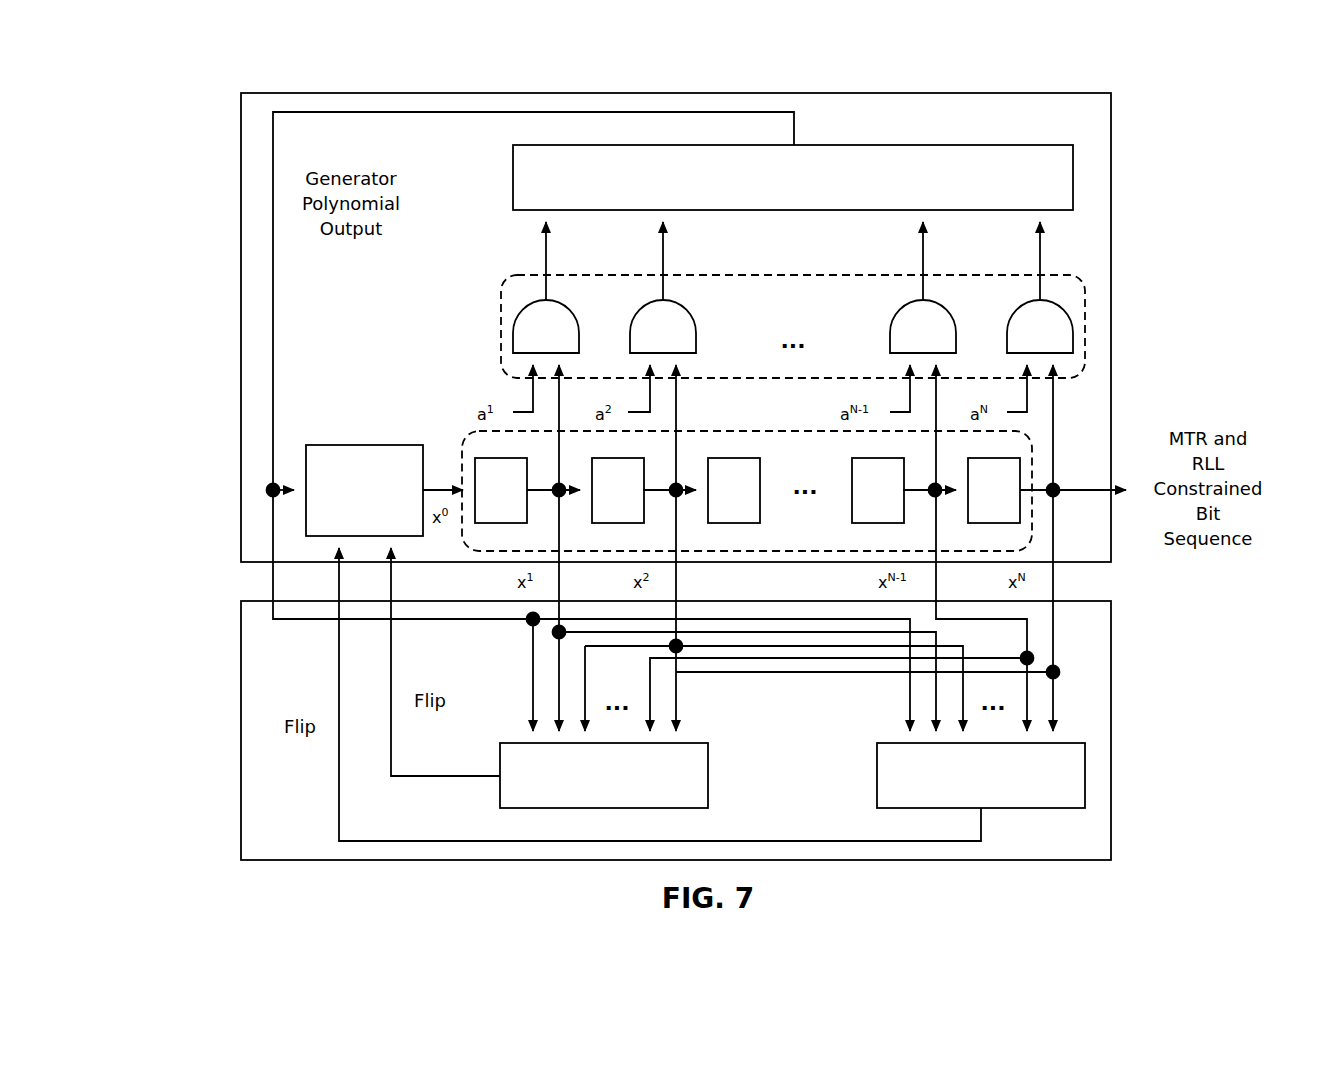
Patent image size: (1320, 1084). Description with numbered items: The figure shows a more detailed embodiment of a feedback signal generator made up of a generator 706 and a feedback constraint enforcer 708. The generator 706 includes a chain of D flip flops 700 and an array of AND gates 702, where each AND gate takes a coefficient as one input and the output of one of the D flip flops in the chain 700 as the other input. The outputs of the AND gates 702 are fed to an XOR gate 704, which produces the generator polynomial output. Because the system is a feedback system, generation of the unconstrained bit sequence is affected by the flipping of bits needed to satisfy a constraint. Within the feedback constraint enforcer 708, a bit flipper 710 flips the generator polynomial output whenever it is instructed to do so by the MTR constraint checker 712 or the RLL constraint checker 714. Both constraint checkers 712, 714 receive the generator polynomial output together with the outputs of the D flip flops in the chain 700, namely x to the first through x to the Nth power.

The chain of D flip flops 700 is at (748, 430).
The array of AND gates 702 is at (501, 330).
The XOR gate 704 is at (794, 212).
The generator 706 is at (241, 327).
The feedback constraint enforcer 708 is at (241, 717).
The bit flipper 710 is at (364, 445).
The MTR constraint checker 712 is at (710, 775).
The RLL constraint checker 714 is at (877, 775).